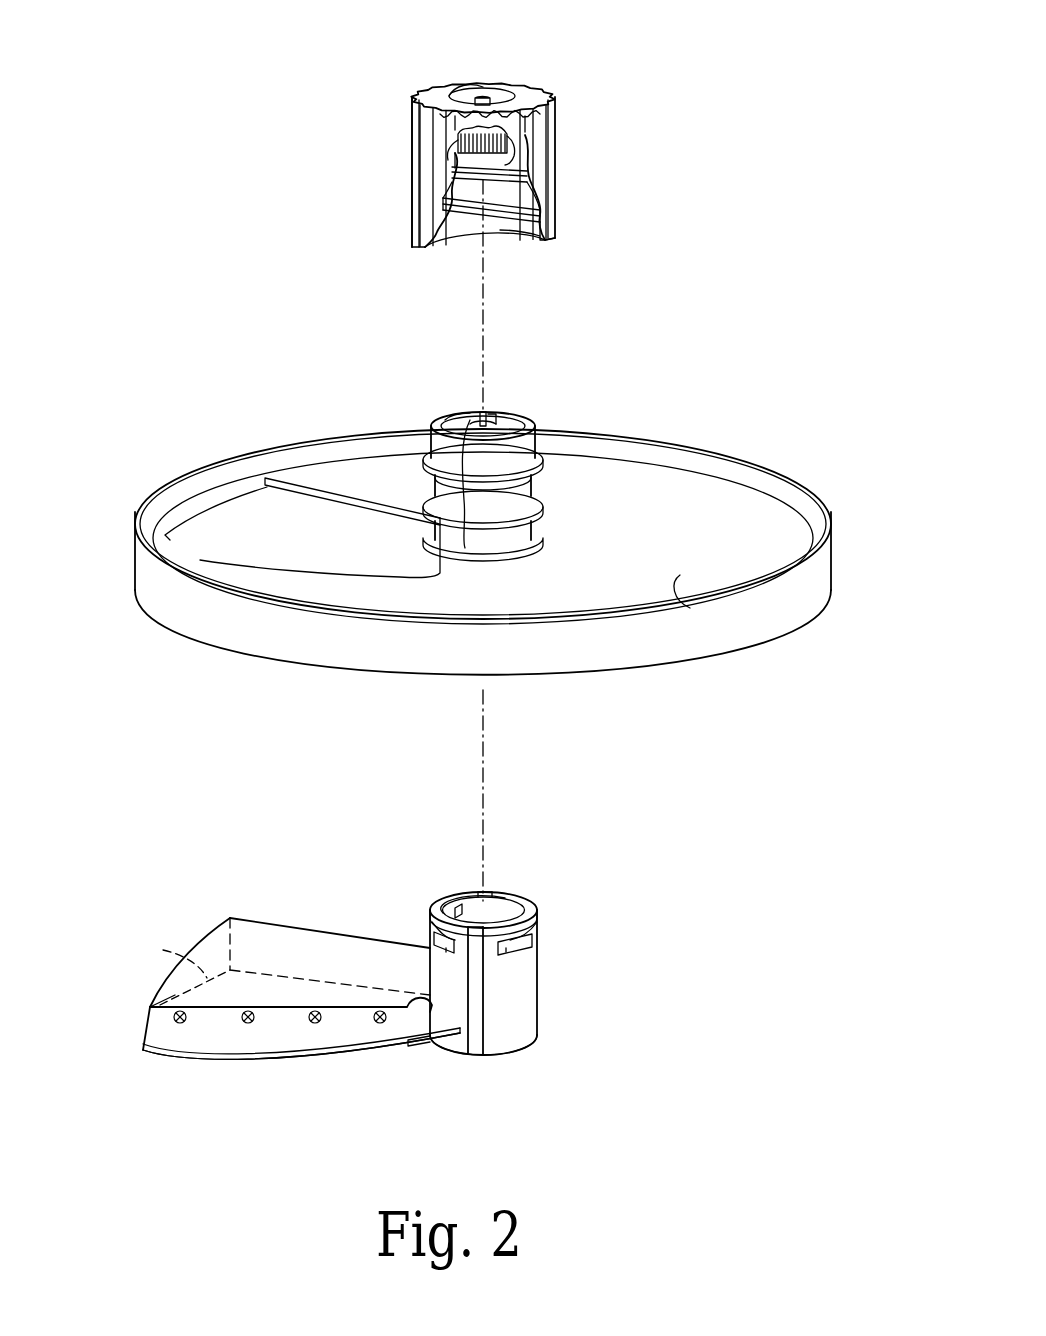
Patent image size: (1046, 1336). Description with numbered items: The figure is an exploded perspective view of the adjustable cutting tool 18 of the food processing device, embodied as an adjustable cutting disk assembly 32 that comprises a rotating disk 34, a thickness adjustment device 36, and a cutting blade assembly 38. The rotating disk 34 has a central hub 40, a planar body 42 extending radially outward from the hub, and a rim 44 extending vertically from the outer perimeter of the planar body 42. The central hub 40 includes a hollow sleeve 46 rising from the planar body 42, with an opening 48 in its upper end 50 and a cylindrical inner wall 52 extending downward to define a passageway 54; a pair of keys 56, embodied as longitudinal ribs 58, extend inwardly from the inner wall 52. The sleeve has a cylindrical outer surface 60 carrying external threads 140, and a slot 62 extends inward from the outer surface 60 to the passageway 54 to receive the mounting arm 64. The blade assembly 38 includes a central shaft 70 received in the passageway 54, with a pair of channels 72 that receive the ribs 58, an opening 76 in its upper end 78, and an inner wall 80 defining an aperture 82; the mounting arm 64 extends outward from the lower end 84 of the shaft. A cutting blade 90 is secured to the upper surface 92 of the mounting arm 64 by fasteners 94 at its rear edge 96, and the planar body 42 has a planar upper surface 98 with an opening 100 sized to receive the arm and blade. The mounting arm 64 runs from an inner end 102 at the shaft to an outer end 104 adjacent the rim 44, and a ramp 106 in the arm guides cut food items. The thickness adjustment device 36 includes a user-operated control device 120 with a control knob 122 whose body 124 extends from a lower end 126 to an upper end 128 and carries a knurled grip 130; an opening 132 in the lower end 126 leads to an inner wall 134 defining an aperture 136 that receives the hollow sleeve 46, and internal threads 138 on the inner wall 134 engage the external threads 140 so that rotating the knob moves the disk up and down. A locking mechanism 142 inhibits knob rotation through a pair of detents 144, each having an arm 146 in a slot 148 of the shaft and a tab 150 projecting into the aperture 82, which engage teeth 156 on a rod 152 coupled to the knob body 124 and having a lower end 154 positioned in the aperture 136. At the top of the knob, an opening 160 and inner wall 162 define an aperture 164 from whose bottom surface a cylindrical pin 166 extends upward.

The adjustable cutting tool 18 is at (136, 113).
The adjustable cutting disk assembly 32 is at (93, 392).
The rotating disk 34 is at (745, 602).
The thickness adjustment device 36 is at (616, 258).
The cutting blade assembly 38 is at (600, 999).
The central hub 40 is at (541, 445).
The planar body 42 is at (735, 514).
The rim 44 is at (831, 516).
The hollow sleeve 46 is at (538, 530).
The opening 48 is at (450, 418).
The upper end 50 is at (433, 427).
The cylindrical inner wall 52 is at (479, 425).
The passageway 54 is at (511, 420).
The keys 56 is at (490, 418).
The longitudinal ribs 58 is at (495, 546).
The cylindrical outer surface 60 is at (540, 488).
The slot 62 is at (424, 517).
The mounting arm 64 is at (270, 935).
The central shaft 70 is at (537, 1022).
The channels 72 is at (505, 876).
The opening 76 is at (516, 905).
The upper end 78 is at (532, 915).
The inner wall 80 is at (455, 917).
The aperture 82 is at (492, 912).
The lower end 84 is at (522, 1056).
The cutting blade 90 is at (288, 1050).
The upper surface 92 is at (165, 990).
The fasteners 94 is at (248, 1025).
The rear edge 96 is at (290, 1012).
The upper surface 98 is at (690, 608).
The opening 100 is at (288, 482).
The inner end 102 is at (428, 1045).
The outer end 104 is at (150, 1004).
The ramp 106 is at (205, 978).
The user-operated control device 120 is at (597, 69).
The control knob 122 is at (549, 125).
The body 124 is at (557, 212).
The lower end 126 is at (548, 240).
The upper end 128 is at (538, 88).
The knurled grip 130 is at (418, 124).
The opening 132 is at (515, 240).
The inner wall 134 is at (465, 215).
The aperture 136 is at (452, 238).
The internal threads 138 is at (530, 178).
The external threads 140 is at (548, 460).
The locking mechanism 142 is at (606, 836).
The detents 144 is at (436, 930).
The arm 146 is at (446, 952).
The slot 148 is at (538, 945).
The tab 150 is at (465, 905).
The rod 152 is at (458, 136).
The lower end 154 is at (513, 143).
The teeth 156 is at (457, 150).
The opening 160 is at (481, 93).
The inner wall 162 is at (487, 94).
The aperture 164 is at (462, 92).
The cylindrical pin 166 is at (540, 112).